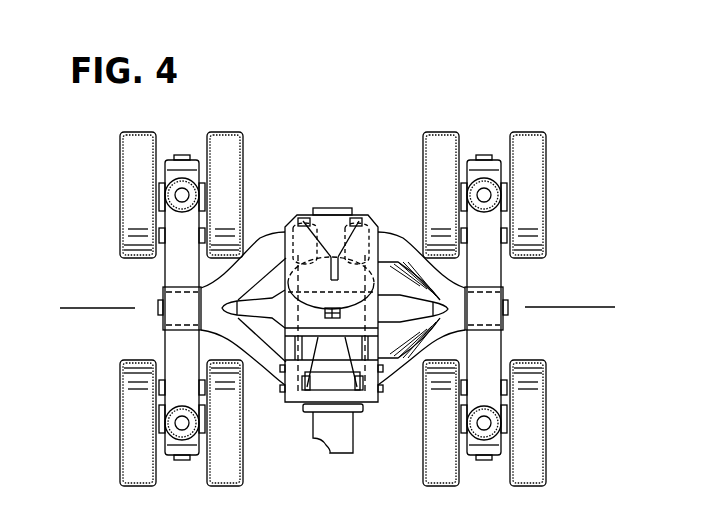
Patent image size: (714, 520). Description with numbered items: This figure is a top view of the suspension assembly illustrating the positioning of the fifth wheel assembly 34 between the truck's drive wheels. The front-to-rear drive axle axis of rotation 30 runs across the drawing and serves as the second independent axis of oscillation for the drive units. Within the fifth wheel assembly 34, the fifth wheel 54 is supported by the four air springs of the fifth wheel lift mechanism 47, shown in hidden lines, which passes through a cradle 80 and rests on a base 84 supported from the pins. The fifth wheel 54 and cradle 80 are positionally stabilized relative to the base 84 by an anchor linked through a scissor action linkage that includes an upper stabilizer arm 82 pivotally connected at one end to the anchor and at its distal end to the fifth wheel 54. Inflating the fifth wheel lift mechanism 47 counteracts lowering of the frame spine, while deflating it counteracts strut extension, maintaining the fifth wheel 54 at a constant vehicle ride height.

The drive axle axis of rotation 30 is at (107, 310).
The fifth wheel assembly 34 is at (333, 288).
The fifth wheel lift mechanism 47 is at (300, 215).
The fifth wheel 54 is at (362, 278).
The cradle 80 is at (300, 322).
The upper stabilizer arm 82 is at (338, 378).
The base 84 is at (363, 392).